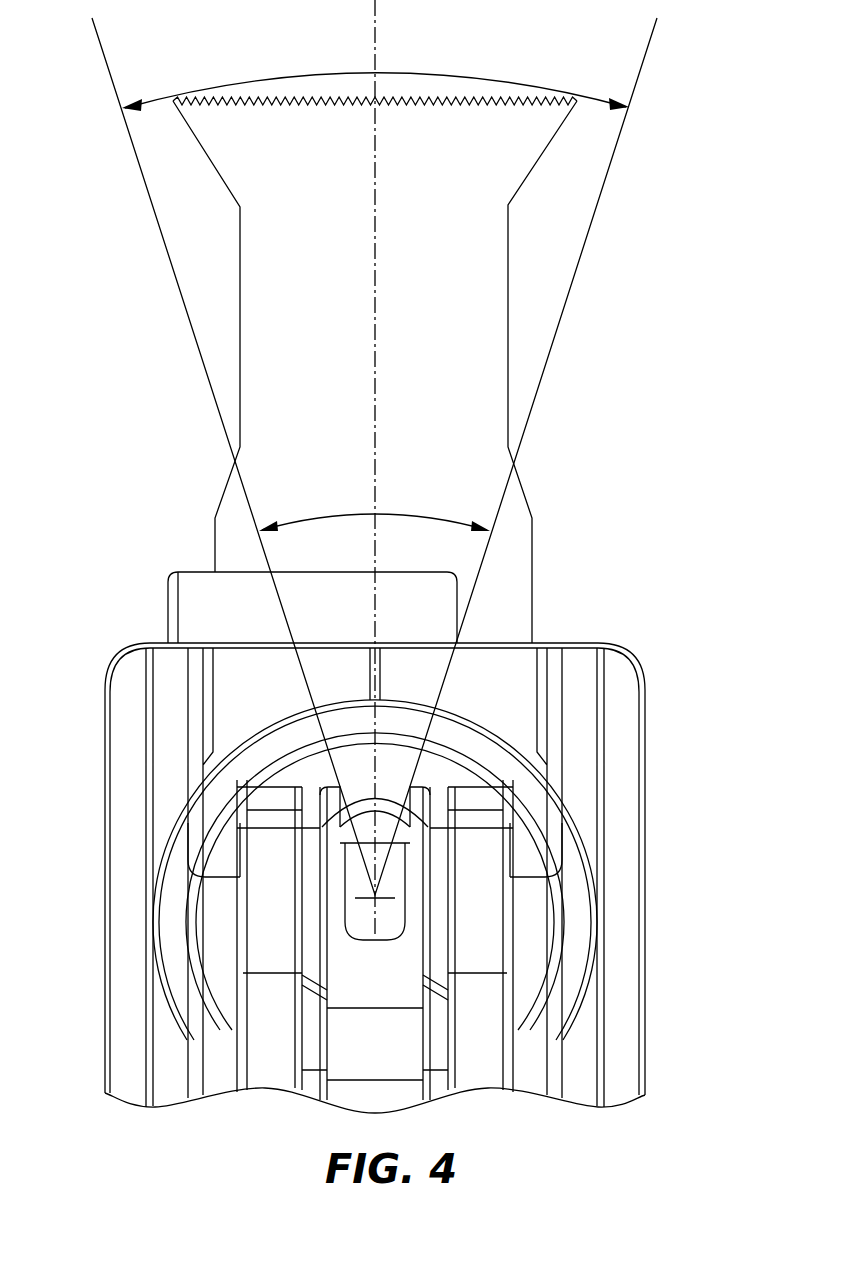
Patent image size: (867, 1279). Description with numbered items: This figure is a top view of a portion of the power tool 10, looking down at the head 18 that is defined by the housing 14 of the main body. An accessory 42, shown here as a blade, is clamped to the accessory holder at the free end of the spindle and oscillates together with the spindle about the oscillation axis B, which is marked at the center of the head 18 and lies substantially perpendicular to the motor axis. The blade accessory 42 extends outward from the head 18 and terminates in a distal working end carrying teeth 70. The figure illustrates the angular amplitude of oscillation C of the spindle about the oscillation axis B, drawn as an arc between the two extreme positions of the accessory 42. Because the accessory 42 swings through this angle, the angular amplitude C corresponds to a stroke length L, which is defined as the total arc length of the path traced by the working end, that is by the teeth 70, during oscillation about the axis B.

The power tool 10 is at (694, 561).
The housing 14 is at (122, 825).
The head 18 is at (620, 680).
The accessory 42 is at (530, 505).
The teeth 70 is at (527, 102).
The stroke length L is at (273, 74).
The angular amplitude of oscillation C is at (413, 512).
The oscillation axis B is at (385, 913).